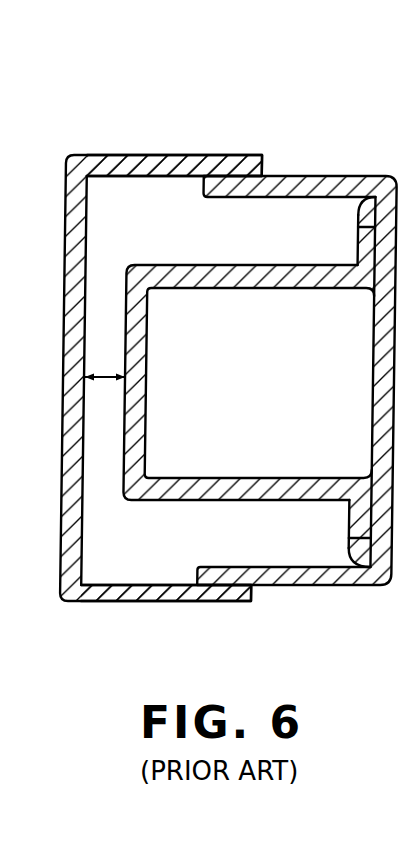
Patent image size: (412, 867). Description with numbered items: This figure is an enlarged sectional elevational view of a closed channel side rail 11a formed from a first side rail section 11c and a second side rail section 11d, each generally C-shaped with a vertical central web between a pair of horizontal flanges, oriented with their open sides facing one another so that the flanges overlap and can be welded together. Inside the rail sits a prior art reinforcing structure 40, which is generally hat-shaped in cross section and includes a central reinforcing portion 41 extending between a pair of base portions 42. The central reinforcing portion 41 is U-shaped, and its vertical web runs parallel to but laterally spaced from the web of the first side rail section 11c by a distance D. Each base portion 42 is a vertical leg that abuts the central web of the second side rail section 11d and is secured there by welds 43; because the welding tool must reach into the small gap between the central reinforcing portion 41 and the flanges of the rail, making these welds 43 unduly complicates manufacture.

The connector housing assembly 11a is at (293, 108).
The first side rail section 11c is at (231, 157).
The second side rail section 11d is at (300, 578).
The reinforcing structure 40 is at (140, 202).
The central reinforcing portion 41 is at (128, 345).
The base portion 42 is at (356, 243).
The weld 43 is at (358, 214).
The distance D is at (105, 371).